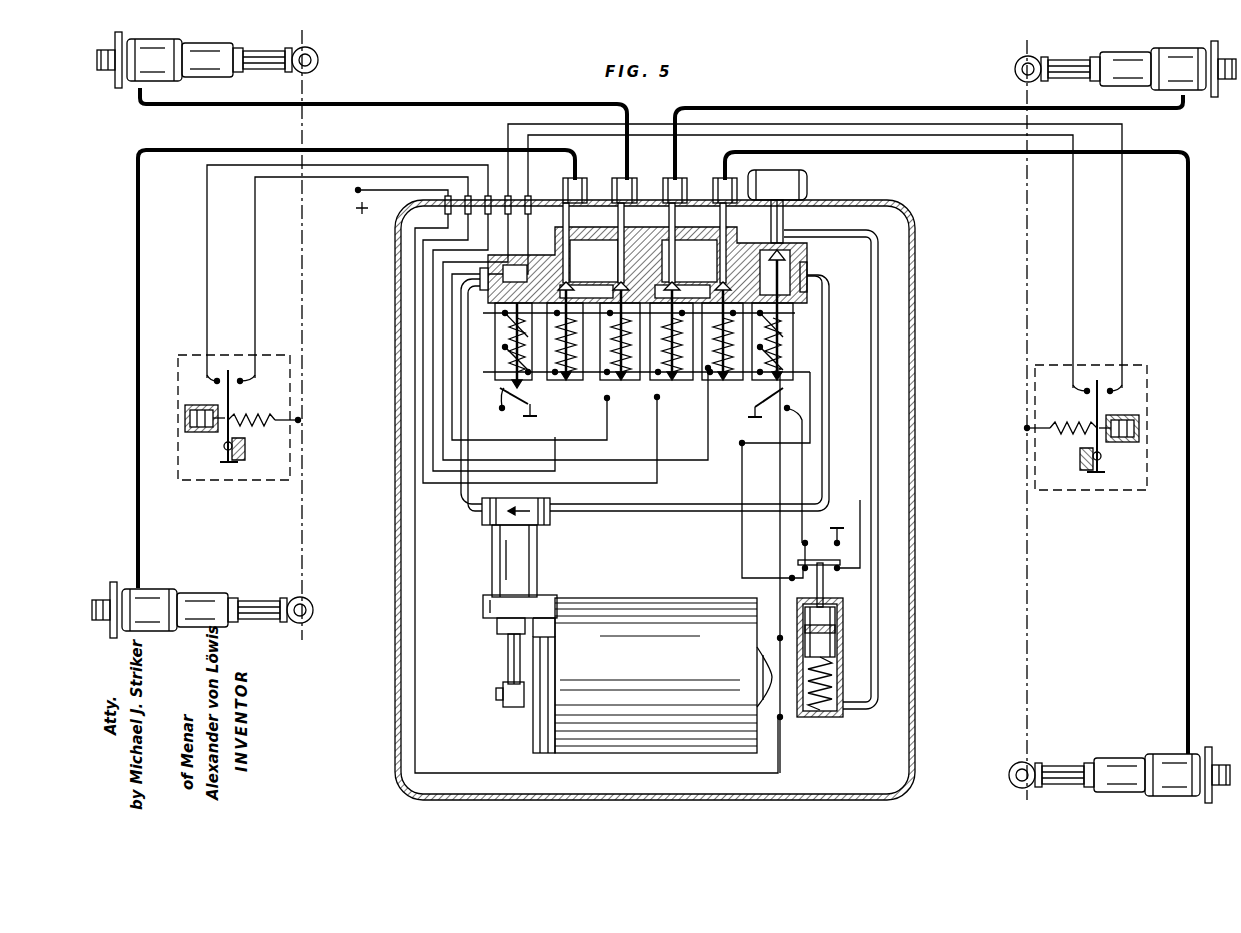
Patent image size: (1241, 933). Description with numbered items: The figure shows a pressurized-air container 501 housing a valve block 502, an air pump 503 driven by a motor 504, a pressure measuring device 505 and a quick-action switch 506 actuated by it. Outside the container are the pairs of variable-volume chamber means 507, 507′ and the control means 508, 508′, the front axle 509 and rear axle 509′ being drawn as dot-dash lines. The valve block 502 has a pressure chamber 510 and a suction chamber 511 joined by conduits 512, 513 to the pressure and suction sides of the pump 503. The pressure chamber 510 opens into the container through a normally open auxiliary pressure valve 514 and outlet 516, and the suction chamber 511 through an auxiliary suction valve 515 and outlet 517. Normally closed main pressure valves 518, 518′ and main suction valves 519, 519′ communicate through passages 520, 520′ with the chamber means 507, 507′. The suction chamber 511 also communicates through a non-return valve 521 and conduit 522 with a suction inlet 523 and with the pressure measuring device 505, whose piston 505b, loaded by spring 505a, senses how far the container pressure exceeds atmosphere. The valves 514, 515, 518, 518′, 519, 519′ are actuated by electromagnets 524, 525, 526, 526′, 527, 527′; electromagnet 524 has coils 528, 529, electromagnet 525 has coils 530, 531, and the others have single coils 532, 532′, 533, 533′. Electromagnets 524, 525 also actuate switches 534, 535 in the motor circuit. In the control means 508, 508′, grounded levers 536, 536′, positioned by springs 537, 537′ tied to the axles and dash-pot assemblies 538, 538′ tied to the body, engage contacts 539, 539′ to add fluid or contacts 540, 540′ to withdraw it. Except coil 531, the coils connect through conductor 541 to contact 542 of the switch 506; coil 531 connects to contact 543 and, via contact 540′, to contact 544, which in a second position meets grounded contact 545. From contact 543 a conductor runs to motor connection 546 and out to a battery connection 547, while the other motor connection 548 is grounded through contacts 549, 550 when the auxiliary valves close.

The container 501 is at (398, 238).
The valve block 502 is at (795, 232).
The air pump 503 is at (494, 558).
The driving motor 504 is at (636, 600).
The pressure measuring device 505 is at (830, 717).
The spring 505a is at (830, 683).
The piston 505b is at (835, 622).
The quick-action switch 506 is at (842, 562).
The variable-volume chamber means 507 is at (205, 335).
The variable-volume chamber means 507' is at (1122, 422).
The control means 508 is at (234, 432).
The control means 508' is at (1091, 442).
The front axle 509 is at (325, 335).
The rear axle 509' is at (1003, 420).
The pressure chamber 510 is at (490, 268).
The suction chamber 511 is at (750, 250).
The conduit 512 is at (403, 458).
The conduit 513 is at (802, 484).
The auxiliary pressure valve 514 is at (490, 264).
The auxiliary suction valve 515 is at (780, 275).
The outlet 516 is at (480, 288).
The outlet 517 is at (795, 310).
The main pressure valve 518 is at (587, 291).
The main pressure valve 518' is at (640, 177).
The main suction valve 519 is at (666, 291).
The main suction valve 519' is at (743, 291).
The passage 520 is at (588, 179).
The passage 520' is at (700, 178).
The non-return valve 521 is at (790, 252).
The conduit 522 is at (880, 407).
The suction inlet 523 is at (800, 178).
The electromagnet 524 is at (480, 375).
The electromagnet 525 is at (785, 320).
The electromagnet 526 is at (576, 426).
The electromagnet 526' is at (628, 425).
The electromagnet 527 is at (674, 432).
The electromagnet 527' is at (730, 432).
The exciting coil 528 is at (535, 320).
The exciting coil 529 is at (470, 358).
The exciting coil 530 is at (760, 340).
The exciting coil 531 is at (780, 343).
The exciting coil 532 is at (569, 360).
The exciting coil 532' is at (627, 352).
The exciting coil 533 is at (674, 360).
The exciting coil 533' is at (725, 360).
The switch 534 is at (536, 416).
The switch 535 is at (777, 396).
The switch-actuating lever 536 is at (205, 416).
The switch-actuating lever 536' is at (1119, 426).
The spring 537 is at (286, 428).
The spring 537' is at (1038, 440).
The dash-pot assembly 538 is at (203, 434).
The dash-pot assembly 538' is at (1125, 443).
The contact 539 is at (324, 274).
The contact 539' is at (839, 259).
The contact 540 is at (353, 280).
The contact 540' is at (809, 264).
The conductor 541 is at (880, 365).
The contact 542 is at (845, 570).
The contact 543 is at (802, 568).
The contact 544 is at (802, 543).
The contact 545 is at (840, 542).
The electrical connection 546 is at (782, 718).
The connection 547 is at (356, 190).
The electrical connection 548 is at (778, 637).
The contact 549 is at (504, 402).
The contact 550 is at (775, 476).